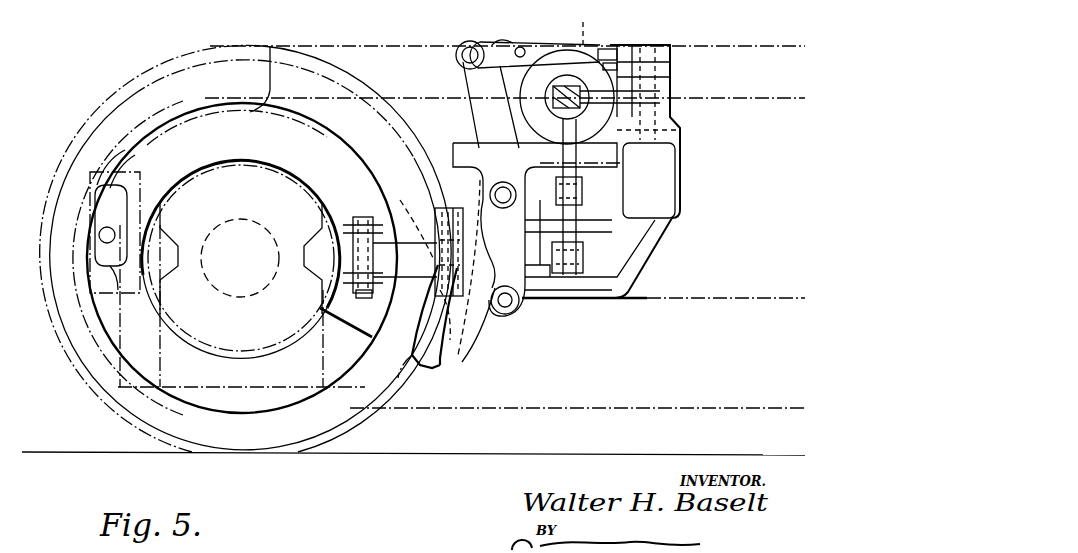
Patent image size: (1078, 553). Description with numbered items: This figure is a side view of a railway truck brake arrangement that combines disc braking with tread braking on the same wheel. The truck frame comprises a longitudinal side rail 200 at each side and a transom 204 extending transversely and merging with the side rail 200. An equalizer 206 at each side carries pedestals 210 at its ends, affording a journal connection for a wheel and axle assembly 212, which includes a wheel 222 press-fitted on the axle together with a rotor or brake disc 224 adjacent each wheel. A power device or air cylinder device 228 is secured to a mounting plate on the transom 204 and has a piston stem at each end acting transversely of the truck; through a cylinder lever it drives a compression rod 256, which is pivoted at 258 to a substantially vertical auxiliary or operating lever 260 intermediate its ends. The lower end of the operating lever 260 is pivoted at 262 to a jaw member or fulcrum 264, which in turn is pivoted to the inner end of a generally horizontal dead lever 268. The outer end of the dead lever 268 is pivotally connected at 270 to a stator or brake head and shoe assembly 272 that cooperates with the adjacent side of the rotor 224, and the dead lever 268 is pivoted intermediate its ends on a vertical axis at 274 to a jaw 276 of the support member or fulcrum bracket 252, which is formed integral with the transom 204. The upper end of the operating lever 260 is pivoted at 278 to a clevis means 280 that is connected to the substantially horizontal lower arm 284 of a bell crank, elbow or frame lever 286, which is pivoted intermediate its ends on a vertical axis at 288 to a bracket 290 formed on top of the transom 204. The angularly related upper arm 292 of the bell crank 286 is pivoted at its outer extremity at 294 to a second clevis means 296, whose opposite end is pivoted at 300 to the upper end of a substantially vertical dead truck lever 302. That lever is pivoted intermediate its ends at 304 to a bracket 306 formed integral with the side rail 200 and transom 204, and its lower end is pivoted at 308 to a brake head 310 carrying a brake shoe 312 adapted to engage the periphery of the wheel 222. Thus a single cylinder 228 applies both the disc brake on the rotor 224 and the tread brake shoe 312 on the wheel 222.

The side rail 200 is at (417, 46).
The transom 204 is at (682, 190).
The equalizer 206 is at (757, 298).
The pedestal 210 is at (160, 376).
The wheel and axle assembly 212 is at (85, 393).
The wheel 222 is at (82, 147).
The rotor or brake disc 224 is at (255, 404).
The power device or air cylinder device 228 is at (537, 45).
The support member or fulcrum bracket 252 is at (608, 300).
The compression rod 256 is at (578, 183).
The pivot 258 is at (600, 190).
The auxiliary or operating lever 260 is at (620, 217).
The pivot 262 is at (578, 283).
The jaw member or fulcrum 264 is at (584, 245).
The dead lever 268 is at (540, 268).
The pivotal connection 270 is at (360, 208).
The stator or brake head and shoe assembly 272 is at (322, 311).
The pivot 274 is at (457, 207).
The jaw 276 is at (432, 267).
The pivot 278 is at (588, 23).
The clevis means 280 is at (518, 146).
The lower arm 284 is at (615, 127).
The bell crank, elbow or frame lever 286 is at (683, 63).
The pivot 288 is at (682, 86).
The bracket 290 is at (688, 39).
The upper arm 292 is at (657, 43).
The pivot 294 is at (626, 44).
The clevis means 296 is at (513, 43).
The pivot 300 is at (466, 64).
The dead truck lever 302 is at (472, 105).
The pivot 304 is at (506, 181).
The bracket 306 is at (443, 147).
The pivot 308 is at (508, 314).
The brake head 310 is at (467, 350).
The brake shoe 312 is at (431, 369).